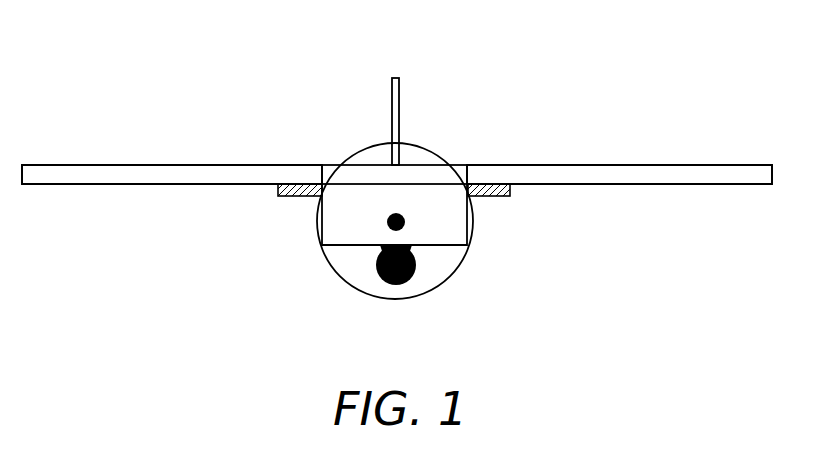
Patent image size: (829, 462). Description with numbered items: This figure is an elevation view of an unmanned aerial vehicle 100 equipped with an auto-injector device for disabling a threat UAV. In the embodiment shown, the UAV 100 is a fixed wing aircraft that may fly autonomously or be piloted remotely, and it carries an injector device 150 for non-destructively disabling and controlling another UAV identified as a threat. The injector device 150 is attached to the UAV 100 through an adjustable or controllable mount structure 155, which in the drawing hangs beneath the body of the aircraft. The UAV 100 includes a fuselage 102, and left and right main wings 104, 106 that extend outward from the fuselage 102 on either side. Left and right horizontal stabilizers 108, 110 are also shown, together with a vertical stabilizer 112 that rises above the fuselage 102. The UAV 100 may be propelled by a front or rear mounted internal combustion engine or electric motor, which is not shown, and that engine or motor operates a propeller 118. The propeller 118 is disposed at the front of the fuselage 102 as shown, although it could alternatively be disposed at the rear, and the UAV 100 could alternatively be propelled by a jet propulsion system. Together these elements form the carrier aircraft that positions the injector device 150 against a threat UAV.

The unmanned aerial vehicle 100 is at (330, 98).
The fuselage 102 is at (322, 229).
The main wing 104 is at (575, 164).
The main wing 106 is at (125, 164).
The horizontal stabilizer 108 is at (512, 190).
The horizontal stabilizer 110 is at (277, 189).
The vertical stabilizer 112 is at (400, 121).
The propeller 118 is at (440, 156).
The injector device 150 is at (432, 265).
The mount structure 155 is at (393, 246).